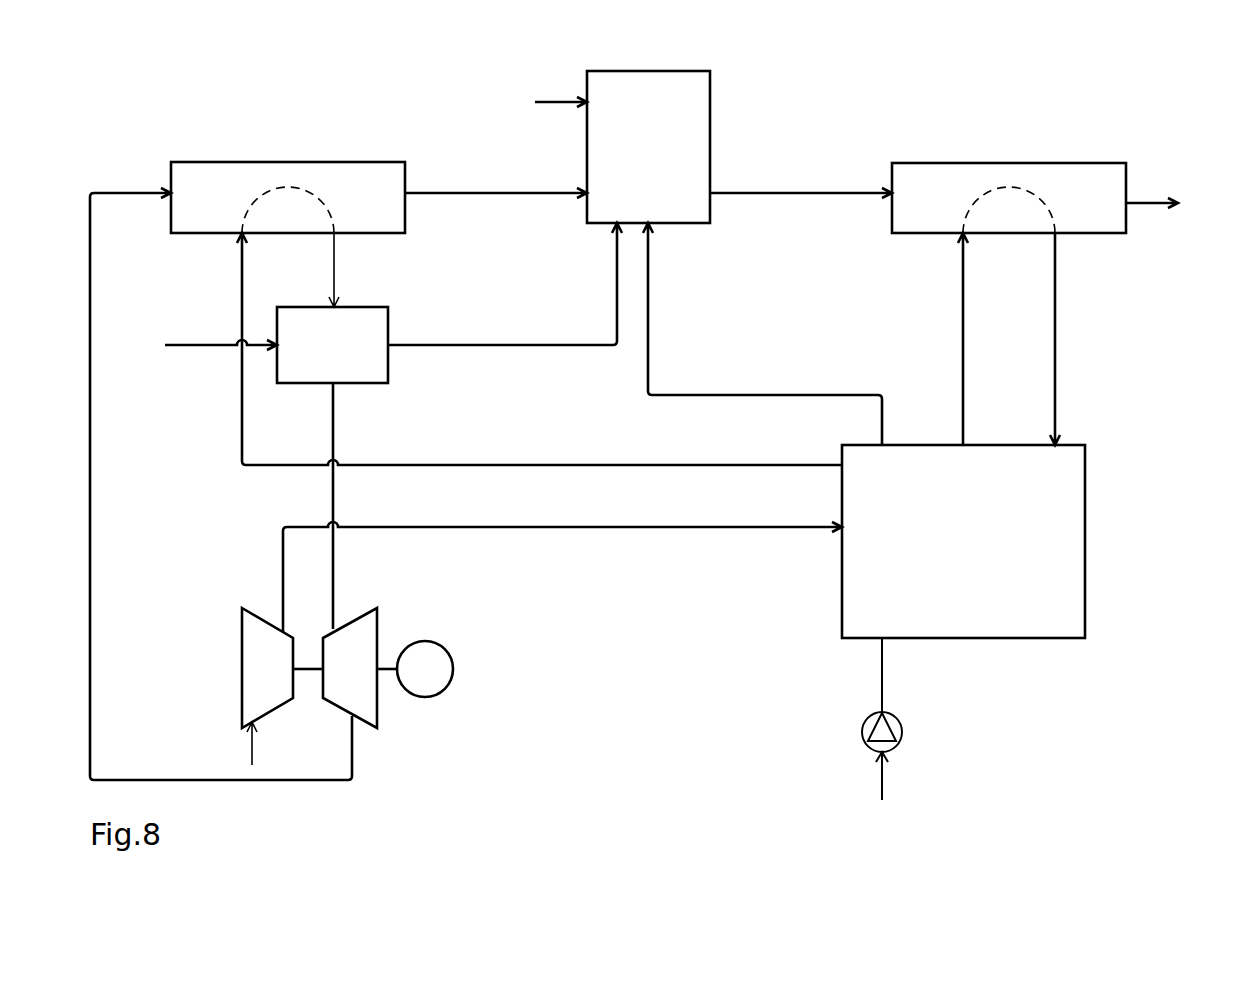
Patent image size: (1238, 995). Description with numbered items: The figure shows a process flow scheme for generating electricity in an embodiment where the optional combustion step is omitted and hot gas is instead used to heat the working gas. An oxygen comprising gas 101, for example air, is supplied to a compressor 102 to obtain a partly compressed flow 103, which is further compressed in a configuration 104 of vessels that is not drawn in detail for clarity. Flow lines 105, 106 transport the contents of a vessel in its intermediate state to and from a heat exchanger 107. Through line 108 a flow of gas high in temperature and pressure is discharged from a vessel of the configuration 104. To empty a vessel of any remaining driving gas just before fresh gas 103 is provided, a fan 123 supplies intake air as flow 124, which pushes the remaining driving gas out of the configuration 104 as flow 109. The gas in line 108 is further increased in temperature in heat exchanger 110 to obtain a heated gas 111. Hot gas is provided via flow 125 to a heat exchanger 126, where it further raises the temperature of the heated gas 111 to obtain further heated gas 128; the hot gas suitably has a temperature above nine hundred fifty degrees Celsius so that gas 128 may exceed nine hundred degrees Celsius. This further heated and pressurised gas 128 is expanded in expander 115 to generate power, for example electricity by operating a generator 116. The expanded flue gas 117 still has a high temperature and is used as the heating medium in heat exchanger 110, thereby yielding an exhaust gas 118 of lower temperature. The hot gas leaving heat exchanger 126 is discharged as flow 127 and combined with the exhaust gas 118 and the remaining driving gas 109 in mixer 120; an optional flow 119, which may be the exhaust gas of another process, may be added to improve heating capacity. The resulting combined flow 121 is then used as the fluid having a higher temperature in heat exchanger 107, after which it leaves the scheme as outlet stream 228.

The oxygen comprising gas 101 is at (250, 750).
The compressor 102 is at (238, 622).
The partly compressed flow 103 is at (598, 527).
The configuration 104 is at (1085, 525).
The flow line 105 is at (963, 340).
The flow line 106 is at (1055, 340).
The heat exchanger 107 is at (1068, 163).
The line 108 is at (600, 465).
The remaining driving gas flow 109 is at (740, 385).
The heat exchanger 110 is at (326, 162).
The heated gas 111 is at (337, 265).
The expander 115 is at (370, 618).
The generator 116 is at (448, 642).
The expanded flue gas 117 is at (125, 780).
The exhaust gas 118 is at (478, 195).
The flow 119 is at (558, 103).
The mixer 120 is at (680, 70).
The combined flow 121 is at (783, 195).
The fan 123 is at (903, 725).
The flow 124 is at (880, 676).
The hot gas flow 125 is at (198, 345).
The heat exchanger 126 is at (388, 320).
The discharged hot gas flow 127 is at (545, 345).
The further heated gas 128 is at (333, 497).
The exhaust outlet 228 is at (1145, 205).